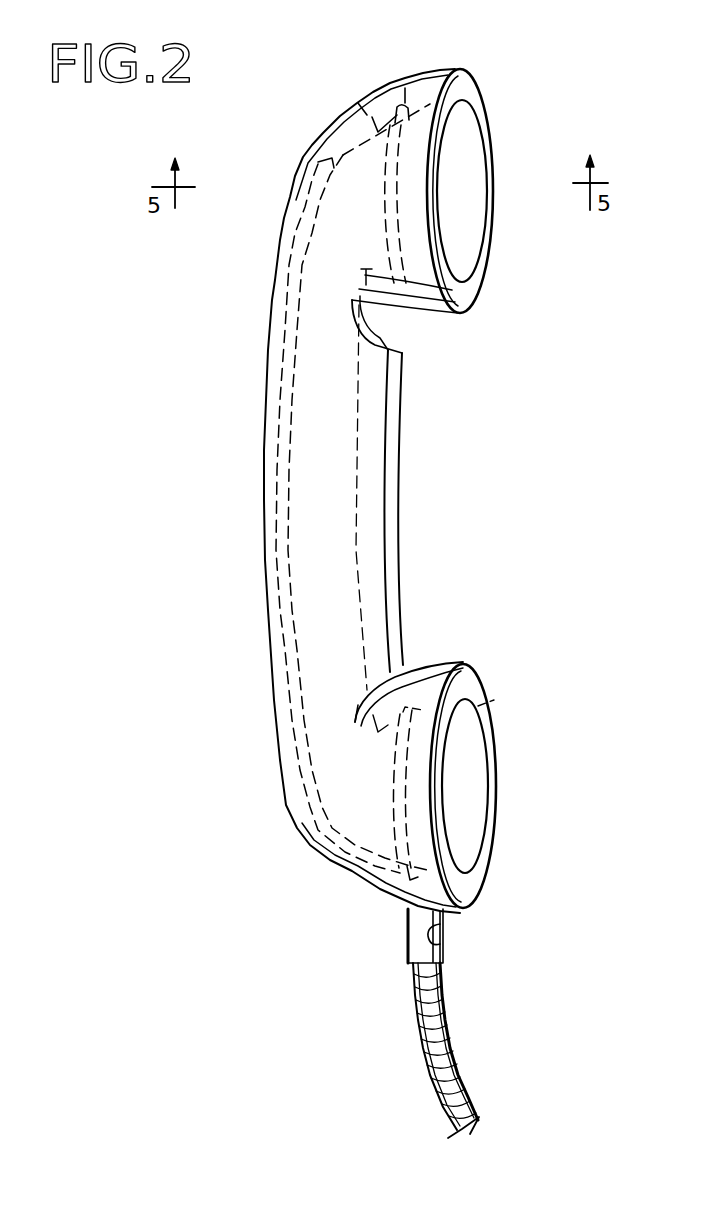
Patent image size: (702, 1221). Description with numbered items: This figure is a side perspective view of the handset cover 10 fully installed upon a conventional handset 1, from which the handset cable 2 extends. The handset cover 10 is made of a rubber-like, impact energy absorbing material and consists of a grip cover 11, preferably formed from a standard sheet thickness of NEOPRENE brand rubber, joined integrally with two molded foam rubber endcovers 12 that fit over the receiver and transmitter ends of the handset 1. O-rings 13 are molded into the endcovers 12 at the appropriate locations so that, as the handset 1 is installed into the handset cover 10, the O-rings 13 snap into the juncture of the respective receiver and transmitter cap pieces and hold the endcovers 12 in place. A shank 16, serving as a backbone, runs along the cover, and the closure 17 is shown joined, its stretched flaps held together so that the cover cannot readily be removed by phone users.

The conventional handset 1 is at (353, 90).
The handset cable 2 is at (447, 1026).
The handset cover 10 is at (246, 613).
The grip cover 11 is at (398, 512).
The endcovers 12 is at (480, 283).
The O-rings 13 is at (410, 70).
The shank 16 is at (274, 459).
The closure 17 is at (420, 656).